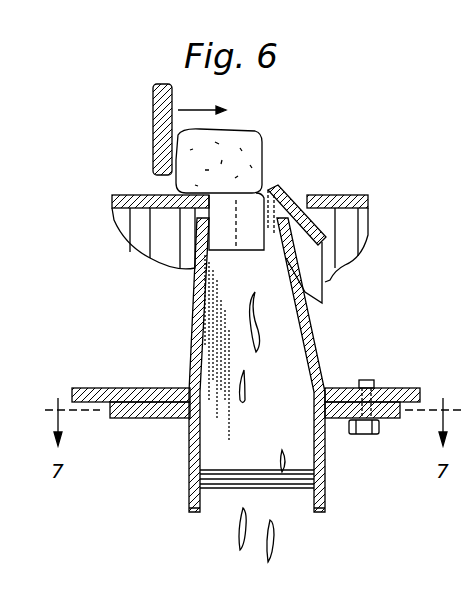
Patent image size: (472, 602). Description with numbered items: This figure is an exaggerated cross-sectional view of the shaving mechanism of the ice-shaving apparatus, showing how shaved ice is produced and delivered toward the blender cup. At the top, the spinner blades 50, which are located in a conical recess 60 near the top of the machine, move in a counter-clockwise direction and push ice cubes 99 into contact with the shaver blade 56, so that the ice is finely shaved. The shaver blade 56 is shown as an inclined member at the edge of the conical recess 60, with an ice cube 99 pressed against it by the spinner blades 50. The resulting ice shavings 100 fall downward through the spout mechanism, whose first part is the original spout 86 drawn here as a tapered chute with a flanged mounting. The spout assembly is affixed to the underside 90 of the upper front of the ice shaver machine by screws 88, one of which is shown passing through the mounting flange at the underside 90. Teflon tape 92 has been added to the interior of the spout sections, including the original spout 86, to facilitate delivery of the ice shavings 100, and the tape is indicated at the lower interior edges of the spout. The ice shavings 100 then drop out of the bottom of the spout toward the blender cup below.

The spinner blades 50 is at (152, 151).
The ice cubes 99 is at (266, 140).
The conical recess 60 is at (130, 195).
The shaver blade 56 is at (292, 202).
The original spout 86 is at (312, 324).
The underside of the upper front 90 is at (390, 390).
The screws 88 is at (360, 434).
The Teflon tape 92 is at (200, 508).
The ice shavings 100 is at (233, 545).